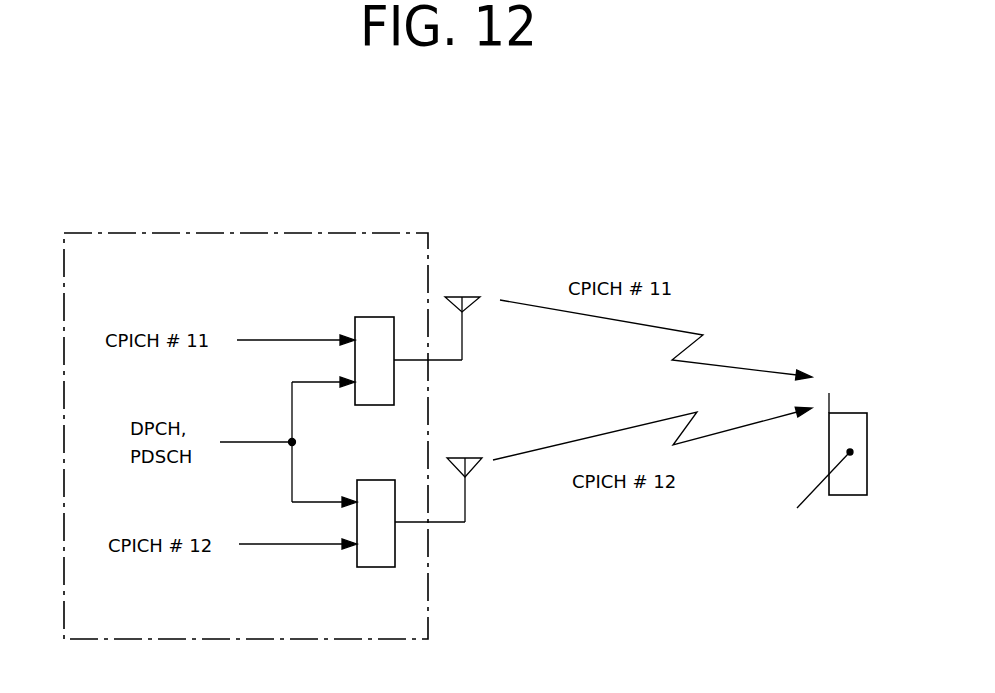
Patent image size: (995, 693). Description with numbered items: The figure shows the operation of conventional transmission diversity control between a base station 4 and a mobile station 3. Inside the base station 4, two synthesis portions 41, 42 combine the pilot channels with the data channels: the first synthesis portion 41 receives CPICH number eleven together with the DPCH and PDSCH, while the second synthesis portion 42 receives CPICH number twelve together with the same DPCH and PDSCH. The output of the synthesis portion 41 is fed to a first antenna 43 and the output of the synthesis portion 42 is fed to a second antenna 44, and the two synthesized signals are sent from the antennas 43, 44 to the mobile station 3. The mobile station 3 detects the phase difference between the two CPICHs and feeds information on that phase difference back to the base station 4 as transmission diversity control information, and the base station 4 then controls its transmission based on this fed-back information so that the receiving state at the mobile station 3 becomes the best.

The mobile station 3 is at (862, 413).
The base station 4 is at (352, 233).
The synthesis portion 41 is at (374, 317).
The synthesis portion 42 is at (371, 567).
The antenna 43 is at (465, 297).
The antenna 44 is at (467, 458).